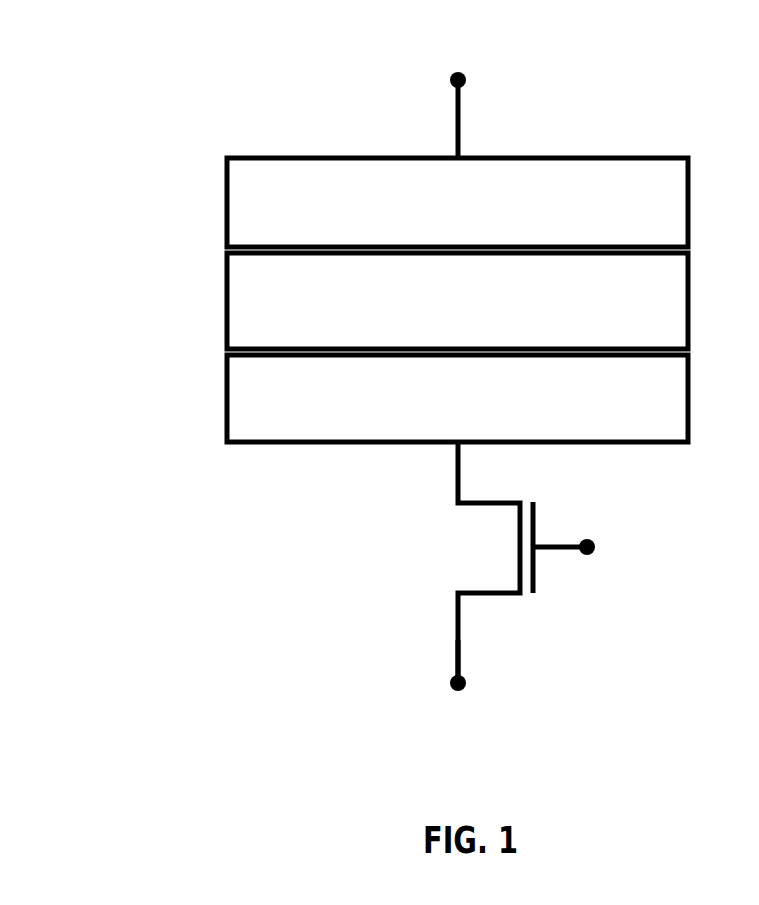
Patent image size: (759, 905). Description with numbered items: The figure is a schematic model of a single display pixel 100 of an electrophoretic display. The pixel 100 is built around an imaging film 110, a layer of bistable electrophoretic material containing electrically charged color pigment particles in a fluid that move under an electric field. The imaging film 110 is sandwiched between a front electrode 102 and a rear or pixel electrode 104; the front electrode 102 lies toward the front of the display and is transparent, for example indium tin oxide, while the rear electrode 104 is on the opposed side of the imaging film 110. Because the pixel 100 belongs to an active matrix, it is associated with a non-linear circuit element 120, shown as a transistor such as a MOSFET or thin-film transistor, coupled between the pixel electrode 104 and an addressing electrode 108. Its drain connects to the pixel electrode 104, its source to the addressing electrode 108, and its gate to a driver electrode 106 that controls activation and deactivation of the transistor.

The display pixel 100 is at (88, 52).
The front electrode 102 is at (257, 153).
The imaging film 110 is at (222, 267).
The rear or pixel electrode 104 is at (222, 395).
The driver electrode 106 is at (582, 532).
The non-linear circuit element 120 is at (535, 608).
The addressing electrode 108 is at (443, 665).